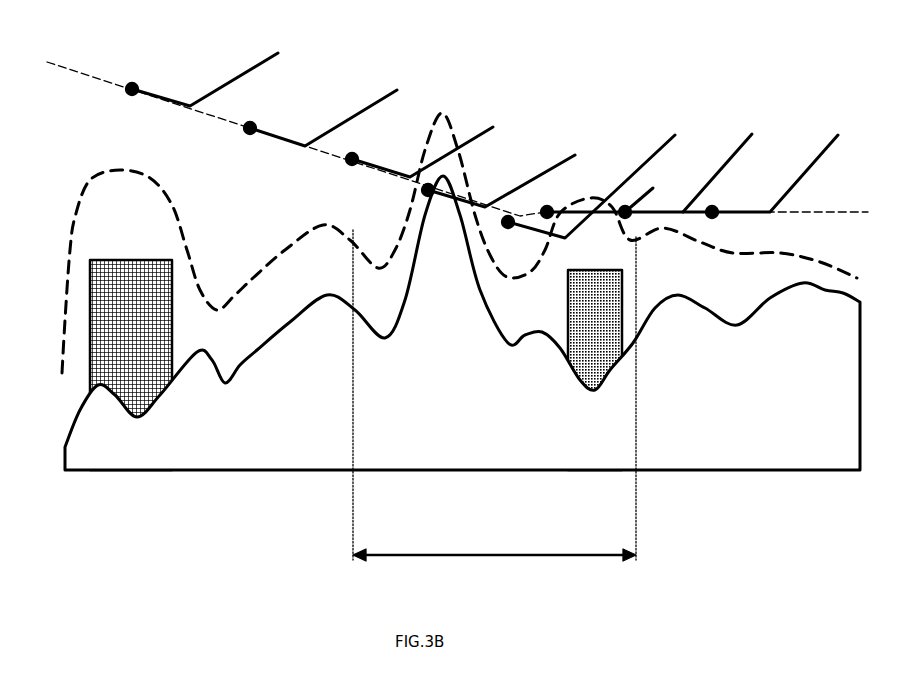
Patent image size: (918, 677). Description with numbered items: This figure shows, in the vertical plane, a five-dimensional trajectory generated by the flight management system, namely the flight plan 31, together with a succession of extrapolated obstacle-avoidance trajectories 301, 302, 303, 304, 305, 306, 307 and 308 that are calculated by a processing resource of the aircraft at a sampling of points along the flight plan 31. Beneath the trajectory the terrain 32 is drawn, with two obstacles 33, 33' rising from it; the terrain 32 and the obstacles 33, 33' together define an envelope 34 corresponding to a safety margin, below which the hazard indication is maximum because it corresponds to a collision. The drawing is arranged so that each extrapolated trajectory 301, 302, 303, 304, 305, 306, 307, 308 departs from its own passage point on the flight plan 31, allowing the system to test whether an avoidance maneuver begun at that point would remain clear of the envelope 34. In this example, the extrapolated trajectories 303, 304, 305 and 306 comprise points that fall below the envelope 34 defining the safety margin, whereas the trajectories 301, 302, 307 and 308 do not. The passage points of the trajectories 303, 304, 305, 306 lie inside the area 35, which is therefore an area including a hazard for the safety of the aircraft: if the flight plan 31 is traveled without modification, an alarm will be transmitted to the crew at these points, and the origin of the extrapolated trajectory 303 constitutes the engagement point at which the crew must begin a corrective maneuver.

The flight plan 31 is at (98, 73).
The terrain 32 is at (197, 455).
The obstacle 33 is at (107, 365).
The obstacle 33' is at (568, 370).
The envelope 34 is at (92, 183).
The area 35 is at (580, 556).
The extrapolated trajectory 301 is at (280, 56).
The extrapolated trajectory 302 is at (390, 88).
The extrapolated trajectory 303 is at (493, 127).
The extrapolated trajectory 304 is at (567, 160).
The extrapolated trajectory 305 is at (640, 188).
The extrapolated trajectory 306 is at (674, 132).
The extrapolated trajectory 307 is at (752, 132).
The extrapolated trajectory 308 is at (838, 132).